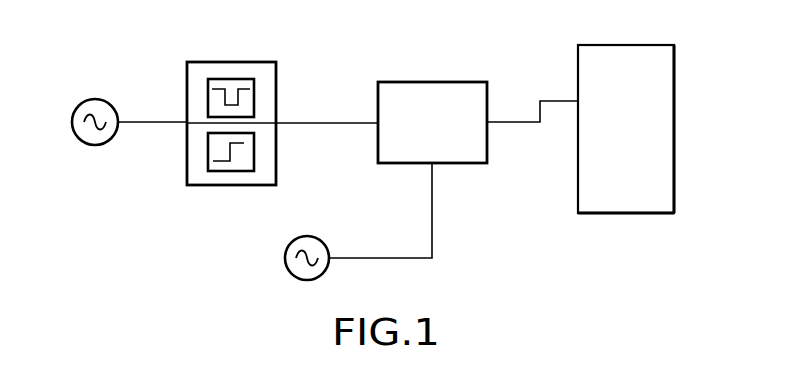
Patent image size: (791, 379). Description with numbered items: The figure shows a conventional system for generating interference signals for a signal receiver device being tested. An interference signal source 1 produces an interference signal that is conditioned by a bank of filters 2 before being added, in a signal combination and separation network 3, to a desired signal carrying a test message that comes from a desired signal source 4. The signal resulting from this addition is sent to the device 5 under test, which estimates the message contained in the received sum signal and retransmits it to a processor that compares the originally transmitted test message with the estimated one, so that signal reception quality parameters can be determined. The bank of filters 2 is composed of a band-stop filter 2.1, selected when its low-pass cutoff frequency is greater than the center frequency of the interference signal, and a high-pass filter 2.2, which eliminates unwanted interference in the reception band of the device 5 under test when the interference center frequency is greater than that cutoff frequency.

The interference signal source 1 is at (92, 100).
The bank of filters 2 is at (244, 101).
The band-stop filter 2.1 is at (254, 90).
The high-pass filter 2.2 is at (254, 150).
The signal combination and separation network 3 is at (432, 82).
The desired signal source 4 is at (288, 270).
The device under test 5 is at (598, 213).